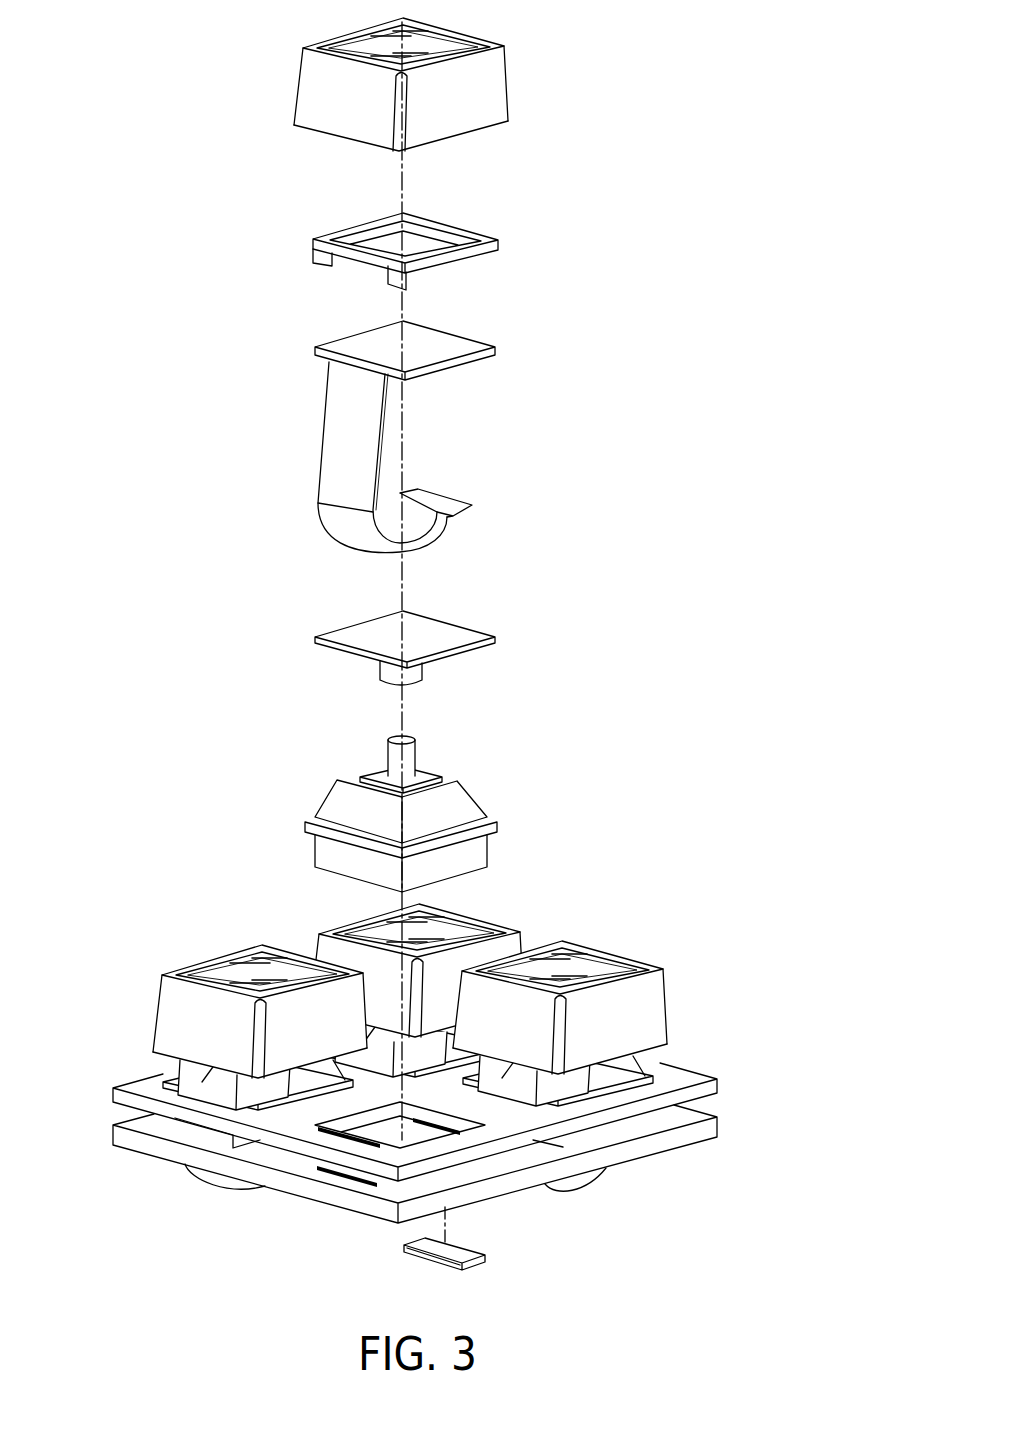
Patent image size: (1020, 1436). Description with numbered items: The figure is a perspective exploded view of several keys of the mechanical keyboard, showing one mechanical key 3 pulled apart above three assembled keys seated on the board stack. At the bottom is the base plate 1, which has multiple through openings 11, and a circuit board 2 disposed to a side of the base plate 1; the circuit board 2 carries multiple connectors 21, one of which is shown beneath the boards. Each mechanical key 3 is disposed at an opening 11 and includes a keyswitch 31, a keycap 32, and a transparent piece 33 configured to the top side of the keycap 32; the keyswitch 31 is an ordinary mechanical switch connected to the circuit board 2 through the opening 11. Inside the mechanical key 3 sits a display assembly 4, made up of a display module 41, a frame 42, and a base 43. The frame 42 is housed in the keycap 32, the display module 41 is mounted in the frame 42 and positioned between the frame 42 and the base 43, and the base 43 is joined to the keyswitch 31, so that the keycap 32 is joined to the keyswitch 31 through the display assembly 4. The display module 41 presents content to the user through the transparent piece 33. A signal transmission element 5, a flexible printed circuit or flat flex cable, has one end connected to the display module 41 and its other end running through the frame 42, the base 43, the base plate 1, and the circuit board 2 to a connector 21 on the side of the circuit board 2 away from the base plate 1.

The base plate 1 is at (688, 1072).
The through opening 11 is at (447, 1130).
The circuit board 2 is at (697, 1140).
The connector 21 is at (403, 1248).
The mechanical key 3 is at (396, 446).
The keyswitch 31 is at (335, 795).
The keycap 32 is at (431, 426).
The transparent piece 33 is at (359, 47).
The display assembly 4 is at (501, 449).
The display module 41 is at (473, 339).
The frame 42 is at (498, 252).
The base 43 is at (467, 577).
The signal transmission element 5 is at (347, 535).